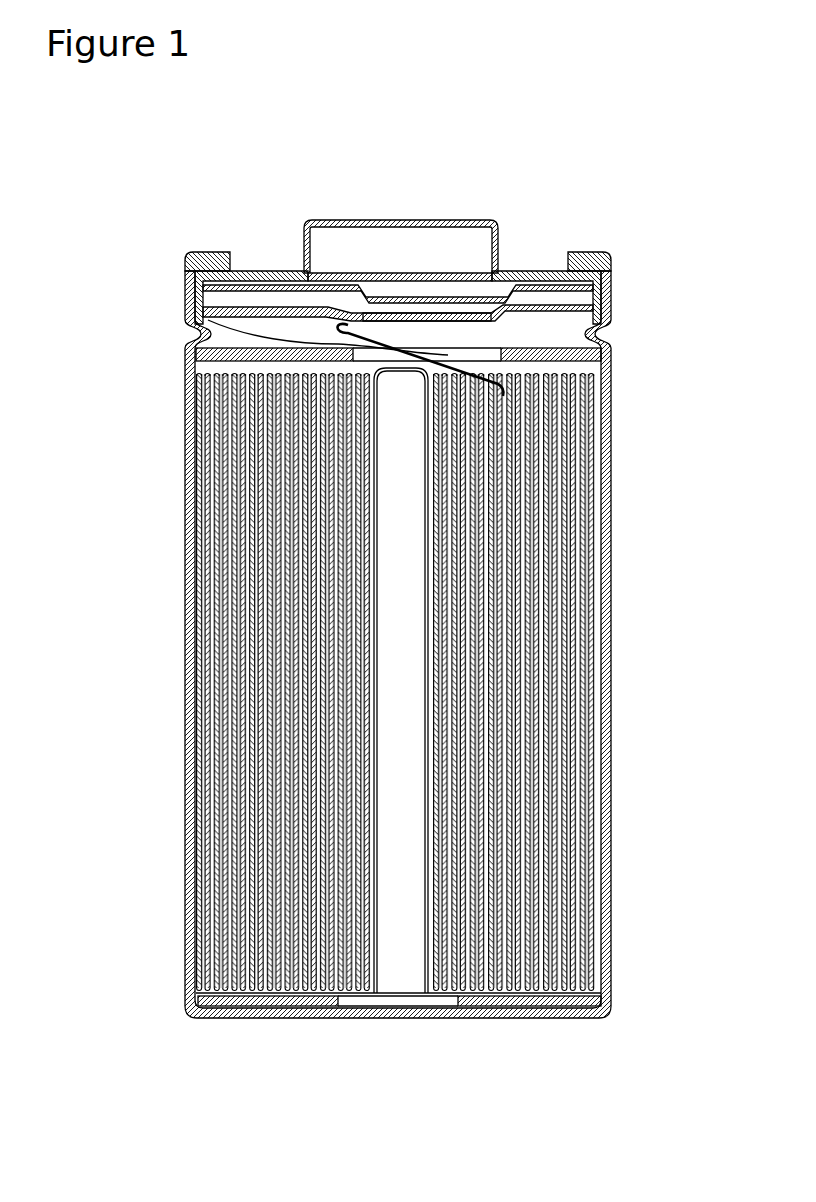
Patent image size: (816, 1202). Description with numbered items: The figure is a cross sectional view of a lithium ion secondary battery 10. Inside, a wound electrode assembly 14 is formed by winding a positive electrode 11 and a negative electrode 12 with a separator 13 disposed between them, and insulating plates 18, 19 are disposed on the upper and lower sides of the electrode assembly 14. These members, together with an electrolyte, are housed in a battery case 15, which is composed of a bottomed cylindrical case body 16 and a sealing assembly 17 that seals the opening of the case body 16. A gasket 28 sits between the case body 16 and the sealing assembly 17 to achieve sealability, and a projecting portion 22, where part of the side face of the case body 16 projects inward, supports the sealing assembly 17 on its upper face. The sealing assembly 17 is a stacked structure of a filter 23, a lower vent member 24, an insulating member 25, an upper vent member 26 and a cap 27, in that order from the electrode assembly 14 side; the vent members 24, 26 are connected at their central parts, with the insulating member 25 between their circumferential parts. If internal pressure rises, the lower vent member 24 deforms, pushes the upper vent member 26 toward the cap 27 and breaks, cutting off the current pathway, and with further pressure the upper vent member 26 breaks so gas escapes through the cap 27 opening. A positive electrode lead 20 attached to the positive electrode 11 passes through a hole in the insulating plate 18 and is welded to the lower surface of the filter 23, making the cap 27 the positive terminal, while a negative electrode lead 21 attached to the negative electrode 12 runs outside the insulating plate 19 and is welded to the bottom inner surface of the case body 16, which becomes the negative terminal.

The lithium ion secondary battery 10 is at (634, 105).
The positive electrode 11 is at (565, 741).
The negative electrode 12 is at (578, 766).
The separator 13 is at (578, 791).
The wound electrode assembly 14 is at (690, 723).
The battery case 15 is at (510, 164).
The case body 16 is at (578, 244).
The sealing assembly 17 is at (516, 266).
The insulating plate 18 is at (596, 346).
The insulating plate 19 is at (610, 1005).
The positive electrode lead 20 is at (328, 318).
The negative electrode lead 21 is at (188, 990).
The projecting portion 22 is at (190, 323).
The filter 23 is at (392, 304).
The lower vent member 24 is at (302, 272).
The insulating member 25 is at (251, 265).
The upper vent member 26 is at (323, 292).
The cap 27 is at (450, 211).
The gasket 28 is at (605, 257).